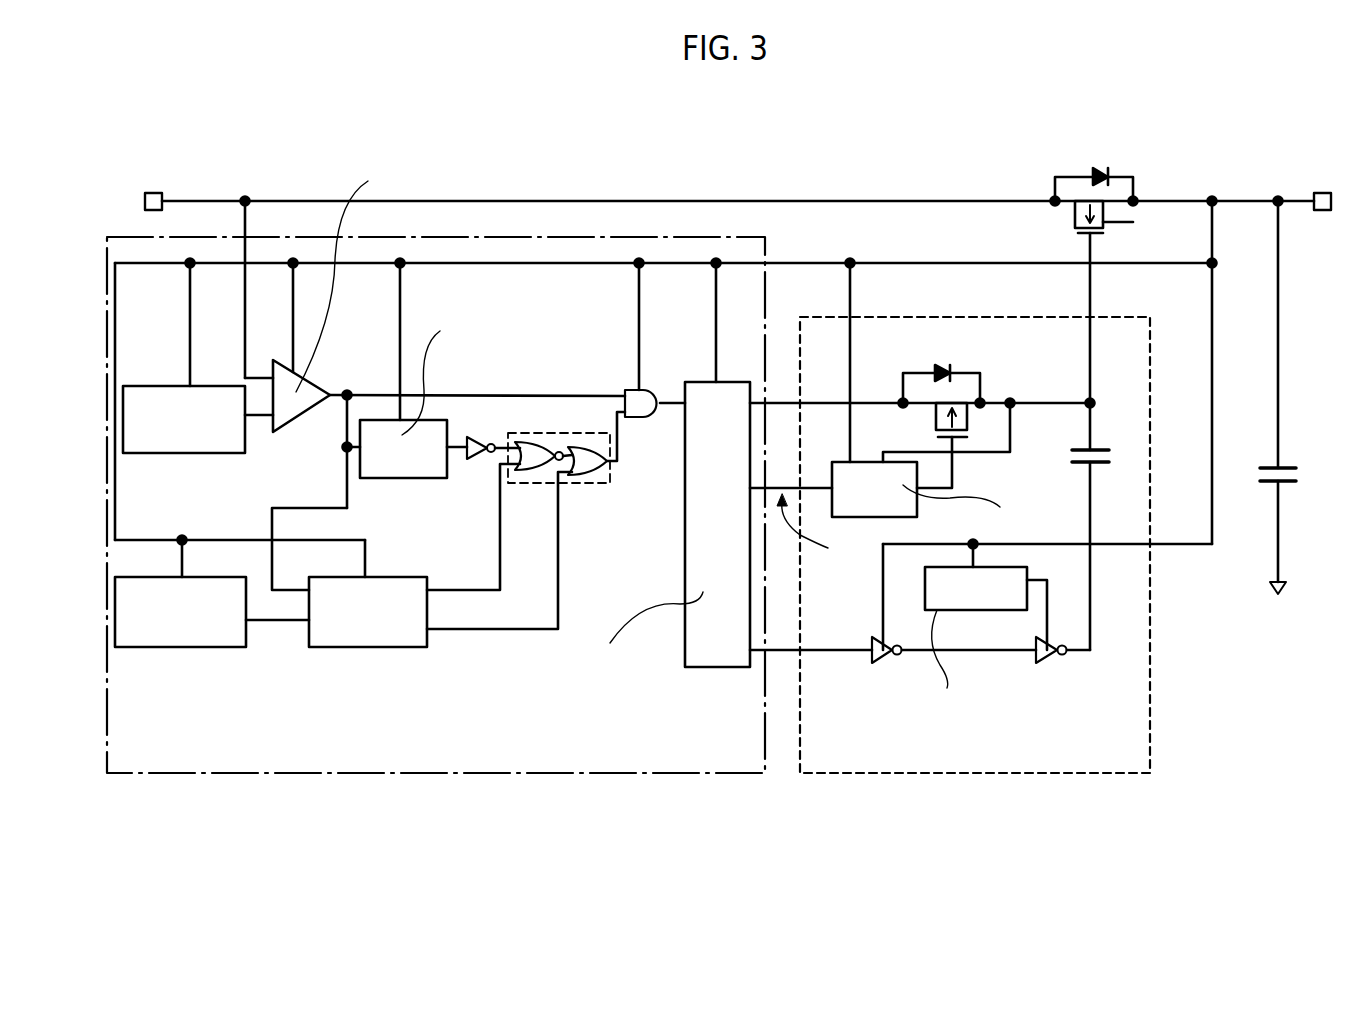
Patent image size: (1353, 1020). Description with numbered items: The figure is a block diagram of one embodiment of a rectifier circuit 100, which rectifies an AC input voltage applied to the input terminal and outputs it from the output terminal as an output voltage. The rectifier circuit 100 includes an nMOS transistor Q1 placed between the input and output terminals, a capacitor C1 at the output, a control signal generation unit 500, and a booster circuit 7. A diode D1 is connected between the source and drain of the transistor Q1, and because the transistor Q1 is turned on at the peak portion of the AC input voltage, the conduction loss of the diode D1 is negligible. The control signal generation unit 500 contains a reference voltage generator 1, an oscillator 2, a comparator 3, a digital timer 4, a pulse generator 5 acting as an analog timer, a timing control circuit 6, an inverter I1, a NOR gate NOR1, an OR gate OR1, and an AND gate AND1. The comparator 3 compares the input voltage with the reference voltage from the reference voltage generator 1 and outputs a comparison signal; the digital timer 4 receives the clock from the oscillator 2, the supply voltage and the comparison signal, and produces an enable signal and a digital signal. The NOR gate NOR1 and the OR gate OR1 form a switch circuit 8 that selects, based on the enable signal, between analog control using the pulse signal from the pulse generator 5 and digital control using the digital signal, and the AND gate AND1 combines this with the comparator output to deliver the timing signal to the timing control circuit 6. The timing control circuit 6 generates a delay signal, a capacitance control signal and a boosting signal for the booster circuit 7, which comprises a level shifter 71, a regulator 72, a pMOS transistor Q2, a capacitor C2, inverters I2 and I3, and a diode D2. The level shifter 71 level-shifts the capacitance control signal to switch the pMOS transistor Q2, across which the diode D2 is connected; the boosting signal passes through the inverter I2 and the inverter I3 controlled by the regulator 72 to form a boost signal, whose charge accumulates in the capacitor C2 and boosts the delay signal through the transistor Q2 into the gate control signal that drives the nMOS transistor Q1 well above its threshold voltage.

The rectifier circuit 100 is at (931, 89).
The control signal generation unit 500 is at (563, 775).
The reference voltage generator 1 is at (155, 385).
The oscillator 2 is at (205, 651).
The comparator 3 is at (283, 358).
The digital timer 4 is at (375, 651).
The pulse generator 5 is at (395, 480).
The timing control circuit 6 is at (718, 669).
The booster circuit 7 is at (1030, 776).
The switch circuit 8 is at (580, 486).
The level shifter 71 is at (918, 503).
The regulator 72 is at (968, 611).
The diode D1 is at (1092, 167).
The diode D2 is at (936, 368).
The nMOS transistor Q1 is at (1068, 218).
The pMOS transistor Q2 is at (928, 416).
The capacitor C1 is at (1299, 459).
The capacitor C2 is at (1114, 459).
The inverter I1 is at (477, 462).
The inverter I2 is at (888, 665).
The inverter I3 is at (1046, 665).
The NOR gate NOR1 is at (545, 440).
The OR gate OR1 is at (600, 481).
The AND gate AND1 is at (642, 419).